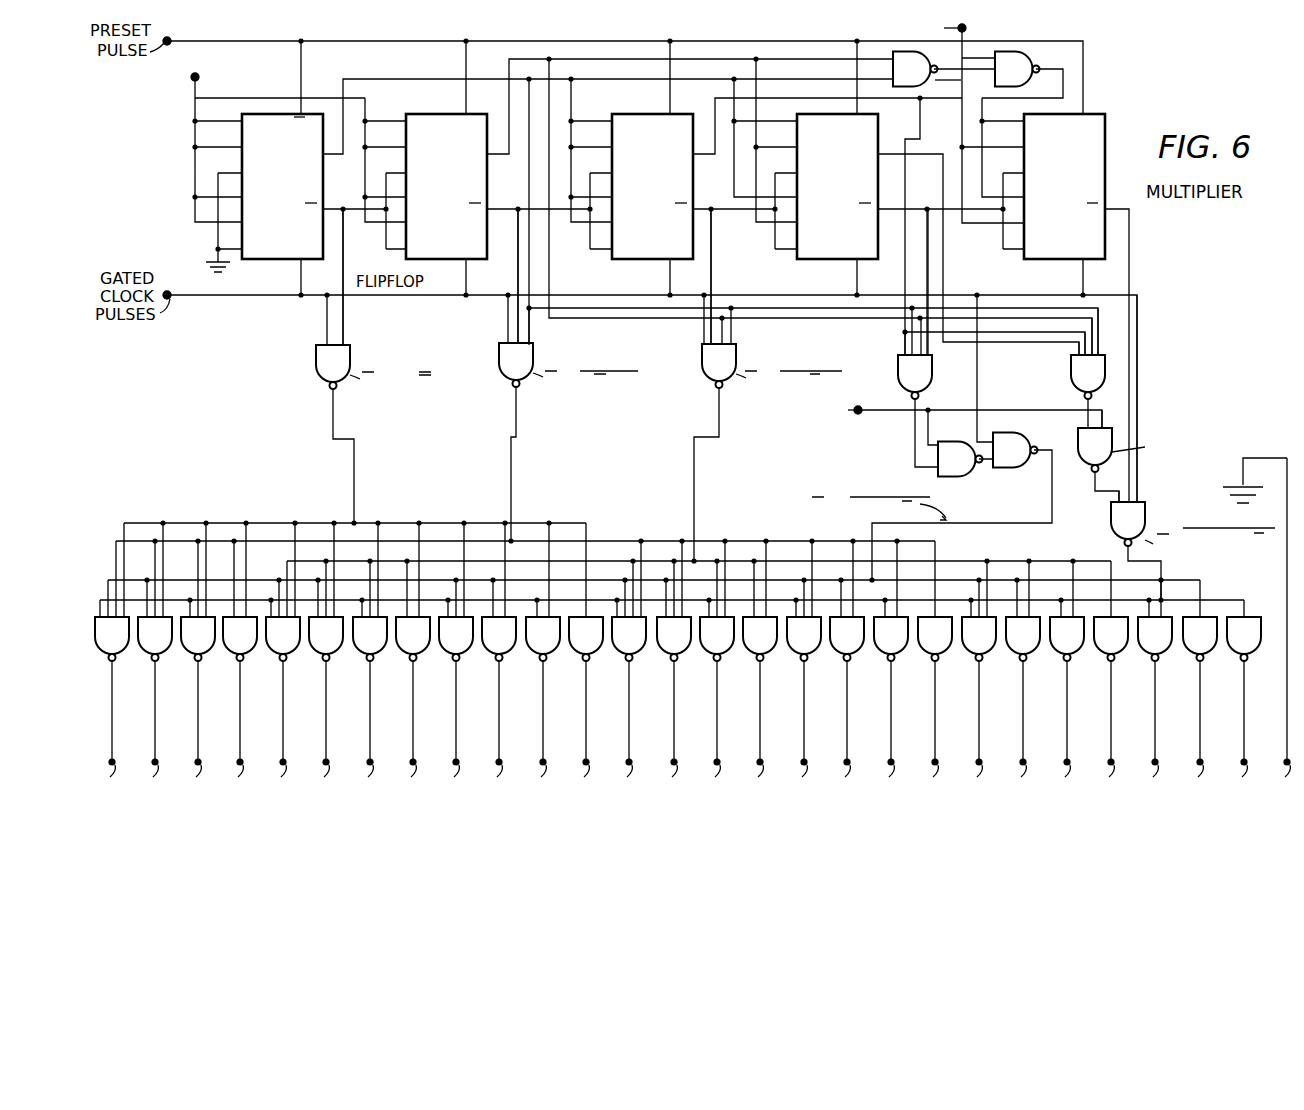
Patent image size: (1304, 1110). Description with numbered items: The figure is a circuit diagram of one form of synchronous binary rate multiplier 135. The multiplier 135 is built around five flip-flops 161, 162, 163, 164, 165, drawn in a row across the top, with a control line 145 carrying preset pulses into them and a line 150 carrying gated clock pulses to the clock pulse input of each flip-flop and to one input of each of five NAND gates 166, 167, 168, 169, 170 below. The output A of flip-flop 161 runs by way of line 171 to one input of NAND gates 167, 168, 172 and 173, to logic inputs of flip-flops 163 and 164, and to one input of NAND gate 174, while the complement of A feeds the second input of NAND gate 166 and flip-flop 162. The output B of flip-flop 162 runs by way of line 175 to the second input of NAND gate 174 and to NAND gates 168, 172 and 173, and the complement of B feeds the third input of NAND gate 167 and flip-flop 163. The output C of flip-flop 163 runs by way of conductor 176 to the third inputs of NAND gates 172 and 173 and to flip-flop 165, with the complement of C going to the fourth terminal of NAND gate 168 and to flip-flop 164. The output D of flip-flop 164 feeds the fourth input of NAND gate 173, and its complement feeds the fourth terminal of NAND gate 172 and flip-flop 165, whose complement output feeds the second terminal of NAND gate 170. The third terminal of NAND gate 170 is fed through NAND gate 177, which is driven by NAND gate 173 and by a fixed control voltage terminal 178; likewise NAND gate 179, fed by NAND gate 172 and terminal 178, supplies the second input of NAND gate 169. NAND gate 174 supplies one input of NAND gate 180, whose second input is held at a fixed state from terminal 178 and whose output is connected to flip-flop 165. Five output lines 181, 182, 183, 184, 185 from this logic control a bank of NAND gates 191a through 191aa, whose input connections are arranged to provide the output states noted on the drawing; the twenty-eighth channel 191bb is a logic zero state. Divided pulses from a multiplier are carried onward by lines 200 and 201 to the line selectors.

The synchronous binary rate multiplier 135 is at (626, 442).
The control line 145 is at (220, 41).
The clock pulse line 150 is at (216, 296).
The flip-flop 161 is at (300, 196).
The flip-flop 162 is at (462, 196).
The flip-flop 163 is at (667, 196).
The flip-flop 164 is at (852, 196).
The flip-flop 165 is at (1079, 196).
The NAND gate 166 is at (316, 356).
The NAND gate 167 is at (499, 356).
The NAND gate 168 is at (702, 356).
The NAND gate 169 is at (1016, 470).
The NAND gate 170 is at (1112, 530).
The line 171 is at (405, 78).
The NAND gate 172 is at (897, 373).
The NAND gate 173 is at (1071, 373).
The NAND gate 174 is at (920, 52).
The line 175 is at (509, 59).
The conductor 176 is at (877, 100).
The NAND gate 177 is at (1082, 446).
The fixed control voltage terminal 178 is at (966, 28).
The NAND gate 179 is at (958, 478).
The NAND gate 180 is at (1022, 90).
The output line 181 is at (355, 481).
The output line 182 is at (512, 481).
The output line 183 is at (695, 481).
The output line 184 is at (1013, 527).
The output line 185 is at (1162, 570).
The NAND gate 191a is at (98, 655).
The NAND gate 191aa is at (1264, 620).
The 28th channel 191bb is at (1287, 513).
The line 200 is at (1287, 656).
The line 201 is at (112, 700).